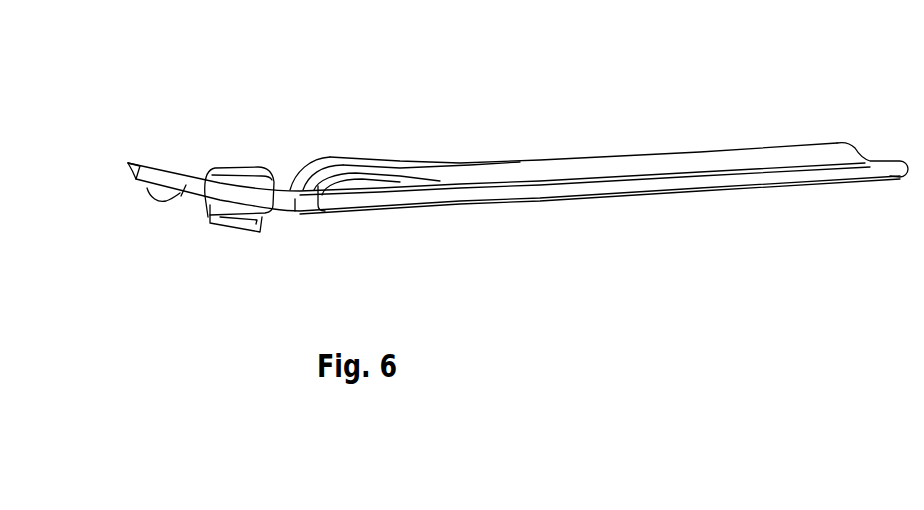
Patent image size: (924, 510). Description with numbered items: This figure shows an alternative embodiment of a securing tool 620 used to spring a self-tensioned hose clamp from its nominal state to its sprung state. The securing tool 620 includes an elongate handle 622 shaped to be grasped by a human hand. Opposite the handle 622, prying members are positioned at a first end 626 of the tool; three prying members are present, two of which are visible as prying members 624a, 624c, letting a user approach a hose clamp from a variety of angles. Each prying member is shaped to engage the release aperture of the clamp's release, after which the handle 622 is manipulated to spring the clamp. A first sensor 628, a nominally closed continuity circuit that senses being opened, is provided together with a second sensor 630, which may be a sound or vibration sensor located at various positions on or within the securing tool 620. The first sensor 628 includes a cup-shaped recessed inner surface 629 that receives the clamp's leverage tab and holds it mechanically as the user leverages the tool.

The securing tool 620 is at (203, 119).
The elongate handle 622 is at (842, 151).
The prying member 624a is at (130, 170).
The prying member 624c is at (243, 168).
The first end 626 is at (125, 147).
The first sensor 628 is at (265, 217).
The recessed inner surface 629 is at (223, 218).
The second sensor 630 is at (340, 188).